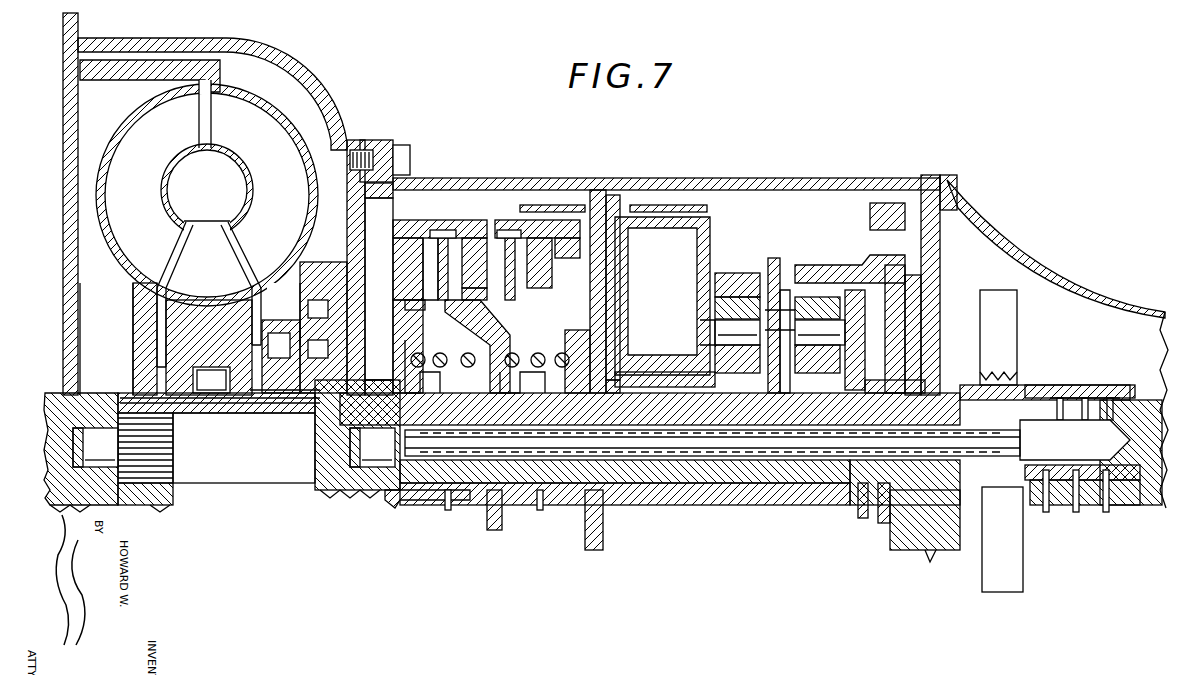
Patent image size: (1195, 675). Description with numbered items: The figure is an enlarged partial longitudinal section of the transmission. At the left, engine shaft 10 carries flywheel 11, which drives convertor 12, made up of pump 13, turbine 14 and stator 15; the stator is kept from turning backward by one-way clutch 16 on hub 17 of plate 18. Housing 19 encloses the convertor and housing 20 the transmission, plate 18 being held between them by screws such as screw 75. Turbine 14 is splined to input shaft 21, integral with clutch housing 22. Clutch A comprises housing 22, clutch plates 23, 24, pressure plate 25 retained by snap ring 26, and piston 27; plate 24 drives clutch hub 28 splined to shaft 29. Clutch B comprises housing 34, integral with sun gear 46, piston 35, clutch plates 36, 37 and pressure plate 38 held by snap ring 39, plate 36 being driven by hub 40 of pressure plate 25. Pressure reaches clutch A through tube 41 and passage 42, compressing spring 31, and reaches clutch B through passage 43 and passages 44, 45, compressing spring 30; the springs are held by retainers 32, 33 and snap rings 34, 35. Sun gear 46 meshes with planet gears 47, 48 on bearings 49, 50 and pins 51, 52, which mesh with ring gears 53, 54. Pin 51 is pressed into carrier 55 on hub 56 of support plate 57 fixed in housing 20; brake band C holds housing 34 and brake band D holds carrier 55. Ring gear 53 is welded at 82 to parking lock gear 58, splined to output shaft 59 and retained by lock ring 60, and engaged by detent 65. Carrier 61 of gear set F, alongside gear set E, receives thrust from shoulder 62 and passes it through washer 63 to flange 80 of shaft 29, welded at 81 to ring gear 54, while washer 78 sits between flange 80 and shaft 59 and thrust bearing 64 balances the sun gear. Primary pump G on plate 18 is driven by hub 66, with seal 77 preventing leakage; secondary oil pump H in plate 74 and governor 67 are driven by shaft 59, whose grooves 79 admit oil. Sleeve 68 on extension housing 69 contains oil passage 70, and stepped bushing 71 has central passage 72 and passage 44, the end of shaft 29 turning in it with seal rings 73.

The engine shaft 10 is at (54, 392).
The flywheel 11 is at (64, 135).
The convertor 12 is at (262, 88).
The pump 13 is at (199, 239).
The turbine 14 is at (189, 160).
The stator 15 is at (209, 294).
The one-way clutch 16 is at (192, 339).
The hub 17 is at (208, 413).
The plate 18 is at (370, 140).
The housing 19 is at (304, 90).
The housing 20 is at (484, 178).
The input shaft 21 is at (238, 483).
The clutch housing 22 is at (425, 220).
The clutch plate 23 is at (394, 304).
The clutch plate 24 is at (446, 230).
The pressure plate 25 is at (482, 282).
The snap ring 26 is at (470, 236).
The piston 27 is at (406, 328).
The clutch hub 28 is at (412, 312).
The shaft 29 is at (626, 462).
The spring 30 is at (534, 363).
The spring 31 is at (447, 358).
The retainer 32 is at (442, 510).
The retainer 33 is at (548, 510).
The housing 34 is at (614, 290).
The piston 35 is at (614, 262).
The clutch plate 36 is at (548, 290).
The clutch plate 37 is at (565, 348).
The pressure plate 38 is at (506, 254).
The snap ring 39 is at (508, 236).
The hub 40 is at (505, 306).
The tube 41 is at (686, 462).
The passage 42 is at (1110, 512).
The passage 43 is at (1050, 512).
The passage 44 is at (1030, 385).
The passage 45 is at (660, 462).
The sun gear 46 is at (704, 505).
The planet gear 47 is at (698, 306).
The planet gear 48 is at (770, 480).
The bearing 49 is at (737, 346).
The bearing 50 is at (830, 322).
The pin 51 is at (700, 338).
The pin 52 is at (817, 321).
The ring gear 53 is at (727, 272).
The ring gear 54 is at (816, 265).
The carrier 55 is at (700, 292).
The hub 56 is at (640, 370).
The support plate 57 is at (598, 190).
The parking lock gear 58 is at (860, 255).
The output shaft 59 is at (900, 380).
The lock ring 60 is at (940, 253).
The carrier 61 is at (780, 341).
The shoulder 62 is at (774, 258).
The washer 63 is at (856, 505).
The thrust bearing 64 is at (818, 505).
The detent 65 is at (878, 203).
The hub 66 is at (262, 405).
The governor 67 is at (998, 337).
The sleeve 68 is at (1112, 385).
The extension housing 69 is at (957, 182).
The oil passage 70 is at (1080, 512).
The stepped bushing 71 is at (1091, 452).
The central passage 72 is at (1005, 495).
The seal rings 73 is at (900, 525).
The plate 74 is at (928, 176).
The screw 75 is at (403, 146).
The seal 77 is at (278, 402).
The washer 78 is at (864, 520).
The grooves 79 is at (1085, 398).
The flange 80 is at (912, 335).
The weld 81 is at (888, 290).
The weld 82 is at (752, 297).
The clutch A is at (432, 200).
The clutch B is at (522, 200).
The brake band C is at (570, 205).
The brake band D is at (676, 205).
The gear set E is at (745, 200).
The gear set F is at (803, 200).
The primary pump G is at (322, 292).
The secondary oil pump H is at (958, 295).